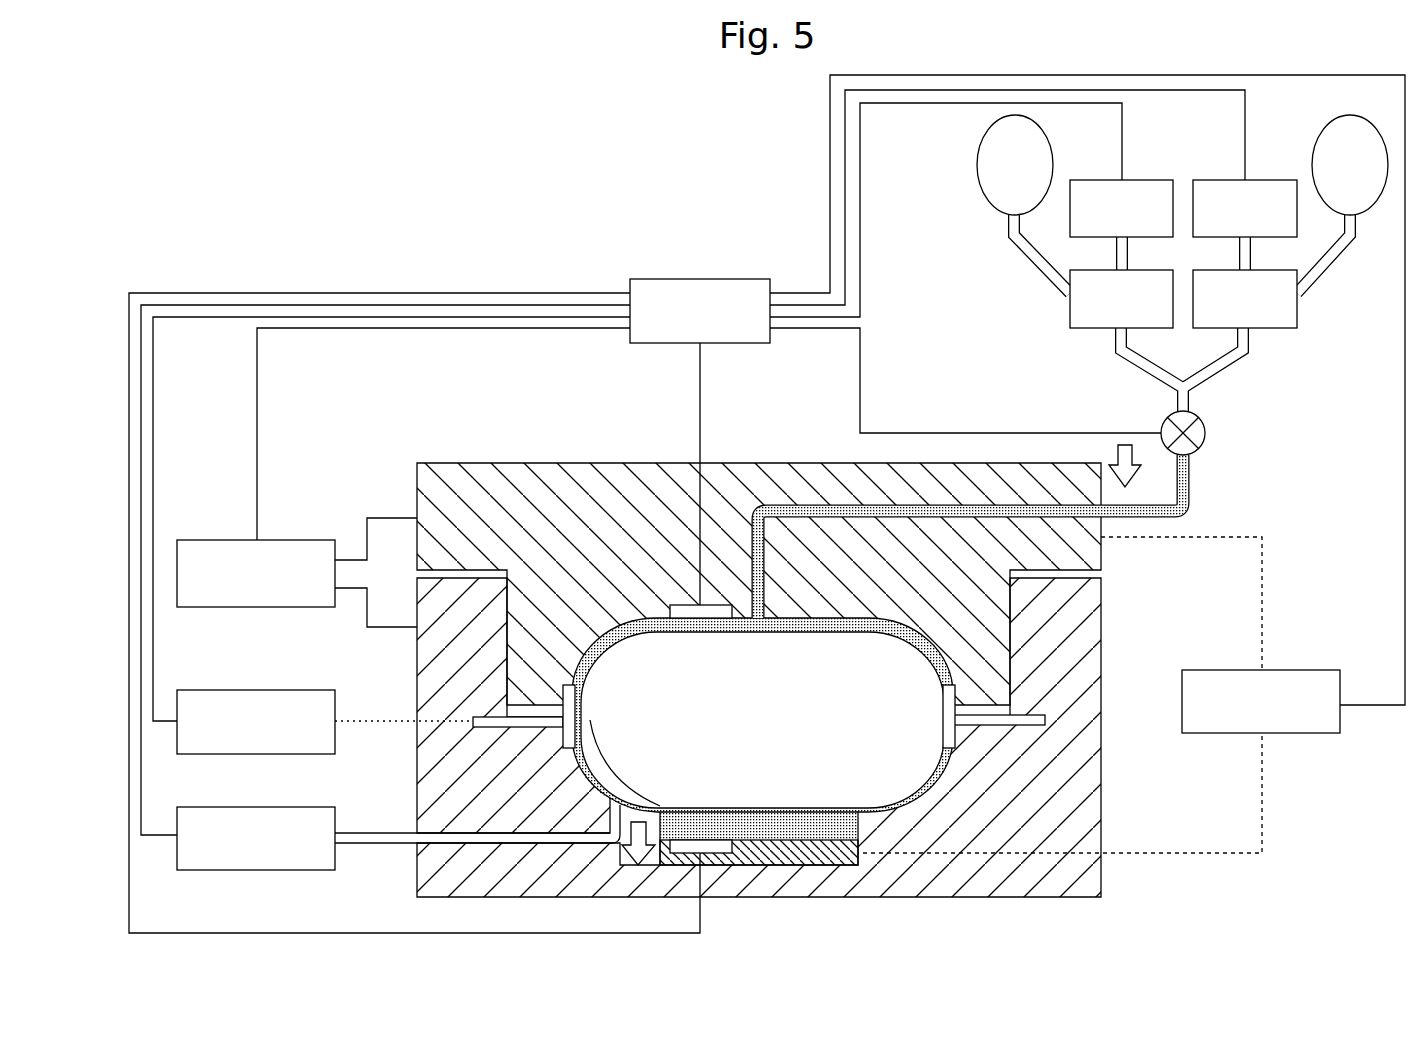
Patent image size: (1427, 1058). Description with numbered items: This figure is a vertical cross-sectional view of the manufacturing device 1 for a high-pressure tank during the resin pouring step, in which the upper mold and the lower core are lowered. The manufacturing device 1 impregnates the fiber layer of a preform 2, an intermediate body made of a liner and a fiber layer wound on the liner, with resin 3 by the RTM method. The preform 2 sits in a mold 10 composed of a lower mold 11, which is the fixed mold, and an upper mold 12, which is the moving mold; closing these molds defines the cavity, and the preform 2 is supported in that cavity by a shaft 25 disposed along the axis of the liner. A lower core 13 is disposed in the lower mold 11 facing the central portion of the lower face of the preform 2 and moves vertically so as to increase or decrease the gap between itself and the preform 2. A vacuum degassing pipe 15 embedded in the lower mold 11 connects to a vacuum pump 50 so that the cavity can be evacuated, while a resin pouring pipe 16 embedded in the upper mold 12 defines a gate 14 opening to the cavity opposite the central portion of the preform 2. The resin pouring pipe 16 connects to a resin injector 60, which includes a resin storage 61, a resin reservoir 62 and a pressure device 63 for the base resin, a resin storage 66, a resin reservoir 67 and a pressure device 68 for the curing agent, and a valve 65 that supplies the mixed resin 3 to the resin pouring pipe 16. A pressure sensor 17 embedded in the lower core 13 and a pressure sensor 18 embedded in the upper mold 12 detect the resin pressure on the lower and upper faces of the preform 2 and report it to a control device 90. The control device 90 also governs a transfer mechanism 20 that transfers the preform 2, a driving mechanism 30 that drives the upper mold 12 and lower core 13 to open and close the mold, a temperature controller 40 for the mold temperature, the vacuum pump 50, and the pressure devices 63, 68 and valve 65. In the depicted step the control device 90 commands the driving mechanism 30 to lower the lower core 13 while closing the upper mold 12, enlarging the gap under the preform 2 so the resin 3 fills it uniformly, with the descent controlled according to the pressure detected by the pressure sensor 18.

The manufacturing device 1 is at (343, 163).
The preform 2 is at (893, 770).
The resin 3 is at (753, 543).
The mold 10 is at (819, 680).
The lower mold 11 is at (1088, 645).
The upper mold 12 is at (1090, 549).
The lower core 13 is at (790, 848).
The gate 14 is at (757, 633).
The vacuum degassing pipe 15 is at (540, 835).
The resin pouring pipe 16 is at (803, 510).
The pressure sensor 17 is at (722, 857).
The pressure sensor 18 is at (687, 610).
The transfer mechanism 20 is at (237, 690).
The shaft 25 is at (1030, 727).
The driving mechanism 30 is at (1316, 670).
The temperature controller 40 is at (237, 540).
The vacuum pump 50 is at (237, 807).
The resin injector 60 is at (1182, 301).
The resin storage 61 is at (992, 213).
The resin reservoir 62 is at (1088, 330).
The pressure device 63 is at (1160, 180).
The valve 65 is at (1280, 407).
The resin storage 66 is at (1373, 213).
The resin reservoir 67 is at (1280, 330).
The pressure device 68 is at (1278, 180).
The control device 90 is at (663, 279).